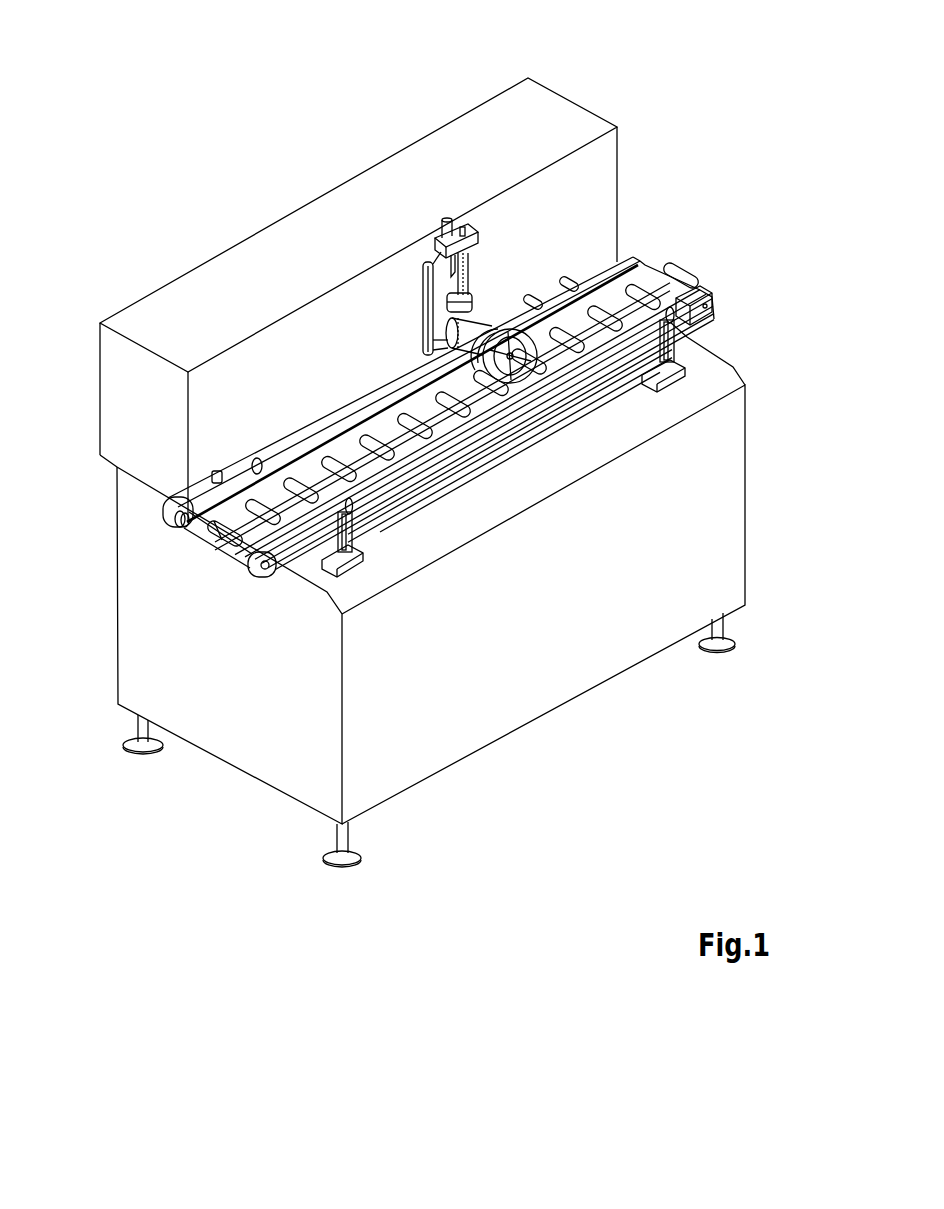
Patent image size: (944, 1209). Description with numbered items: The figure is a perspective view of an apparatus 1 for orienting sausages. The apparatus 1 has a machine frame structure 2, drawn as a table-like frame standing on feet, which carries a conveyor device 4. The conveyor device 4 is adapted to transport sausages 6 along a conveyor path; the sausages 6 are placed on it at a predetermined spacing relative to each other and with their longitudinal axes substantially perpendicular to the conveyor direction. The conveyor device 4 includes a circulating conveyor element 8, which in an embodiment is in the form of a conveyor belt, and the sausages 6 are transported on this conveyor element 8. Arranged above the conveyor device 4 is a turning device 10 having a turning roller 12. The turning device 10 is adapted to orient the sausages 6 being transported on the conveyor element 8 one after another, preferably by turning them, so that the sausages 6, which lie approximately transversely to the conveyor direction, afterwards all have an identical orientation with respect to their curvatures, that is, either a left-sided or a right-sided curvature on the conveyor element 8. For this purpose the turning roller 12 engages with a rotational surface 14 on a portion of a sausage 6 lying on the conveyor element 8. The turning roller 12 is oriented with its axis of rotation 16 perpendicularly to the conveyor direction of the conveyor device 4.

The apparatus 1 is at (166, 955).
The machine frame structure 2 is at (615, 628).
The conveyor device 4 is at (660, 240).
The sausages 6 is at (262, 505).
The circulating conveyor element 8 is at (703, 290).
The turning device 10 is at (400, 300).
The turning roller 12 is at (510, 357).
The rotational surface 14 is at (500, 328).
The axis of rotation 16 is at (598, 400).